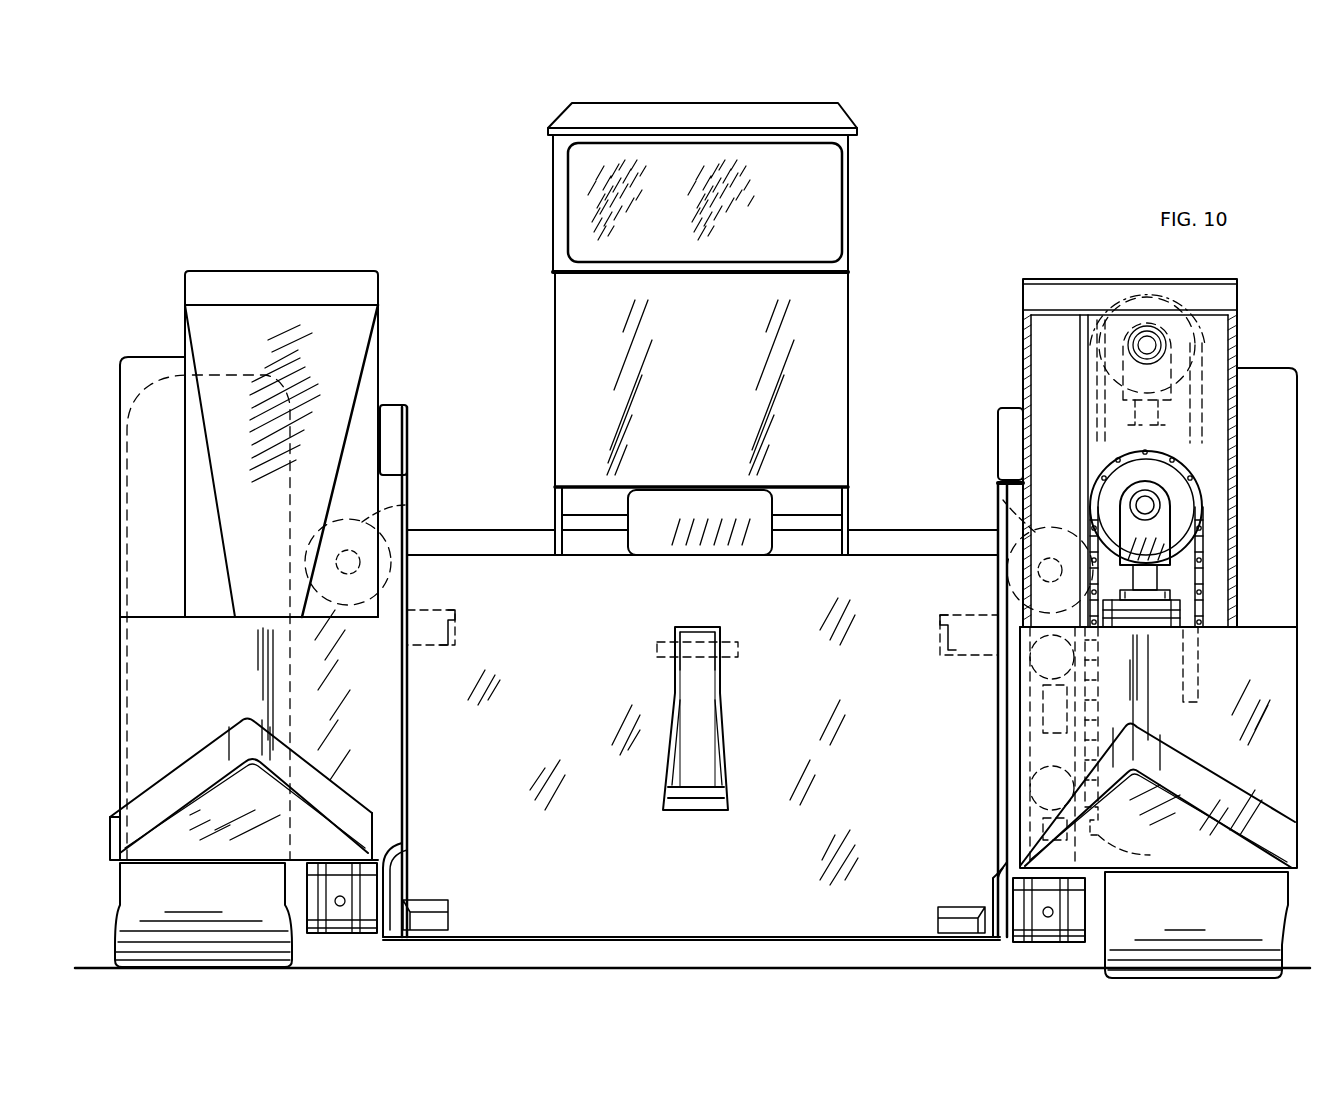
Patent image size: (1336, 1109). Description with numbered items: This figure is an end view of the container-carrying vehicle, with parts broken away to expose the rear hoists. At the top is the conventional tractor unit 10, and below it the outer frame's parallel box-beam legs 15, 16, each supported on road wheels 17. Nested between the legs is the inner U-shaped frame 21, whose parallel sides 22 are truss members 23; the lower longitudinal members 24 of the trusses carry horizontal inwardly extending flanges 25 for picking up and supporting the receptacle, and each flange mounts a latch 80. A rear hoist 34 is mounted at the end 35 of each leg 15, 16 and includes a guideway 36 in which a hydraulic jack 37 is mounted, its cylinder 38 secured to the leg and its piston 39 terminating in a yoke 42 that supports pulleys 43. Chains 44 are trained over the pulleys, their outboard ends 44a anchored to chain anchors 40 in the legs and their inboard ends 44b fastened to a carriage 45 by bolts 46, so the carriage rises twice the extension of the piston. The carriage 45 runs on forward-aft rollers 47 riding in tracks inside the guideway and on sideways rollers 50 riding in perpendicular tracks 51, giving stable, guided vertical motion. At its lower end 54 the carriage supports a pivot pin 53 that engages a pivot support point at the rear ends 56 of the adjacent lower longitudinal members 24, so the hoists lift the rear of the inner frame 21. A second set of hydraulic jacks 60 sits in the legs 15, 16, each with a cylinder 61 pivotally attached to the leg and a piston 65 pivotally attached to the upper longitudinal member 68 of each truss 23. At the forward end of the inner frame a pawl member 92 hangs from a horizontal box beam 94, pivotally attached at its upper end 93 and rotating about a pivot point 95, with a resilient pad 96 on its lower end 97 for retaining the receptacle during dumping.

The tractor unit 10 is at (856, 190).
The leg 15 is at (112, 655).
The leg 16 is at (1297, 680).
The road wheels 17 is at (105, 896).
The inner U-shaped frame 21 is at (417, 417).
The sides 22 is at (410, 440).
The truss members 23 is at (398, 405).
The lower longitudinal members 24 is at (395, 848).
The horizontal inwardly extending flanges 25 is at (458, 648).
The rear hoist 34 is at (1158, 453).
The end 35 is at (264, 684).
The guideway 36 is at (1023, 382).
The hydraulic jack 37 is at (1170, 594).
The cylinder 38 is at (1180, 614).
The piston 39 is at (1190, 415).
The chain anchors 40 is at (1198, 690).
The yoke 42 is at (1171, 365).
The pulleys 43 is at (1195, 298).
The chains 44 is at (1160, 297).
The outboard ends 44a is at (1185, 648).
The inboard ends 44b is at (1105, 815).
The carriage 45 is at (300, 860).
The bolts 46 is at (1139, 849).
The forward-aft rollers 47 is at (1043, 710).
The sideways rollers 50 is at (1030, 672).
The tracks 51 is at (1007, 595).
The pivot pin 53 is at (305, 905).
The lower end 54 is at (322, 940).
The rear ends 56 is at (398, 940).
The hydraulic jacks 60 is at (410, 520).
The cylinder 61 is at (410, 505).
The piston 65 is at (360, 562).
The upper longitudinal member 68 is at (407, 465).
The latch 80 is at (457, 625).
The pawl member 92 is at (709, 734).
The upper end 93 is at (697, 630).
The horizontal box beam 94 is at (639, 594).
The pivot point 95 is at (740, 648).
The resilient pad 96 is at (697, 805).
The lower end 97 is at (692, 790).